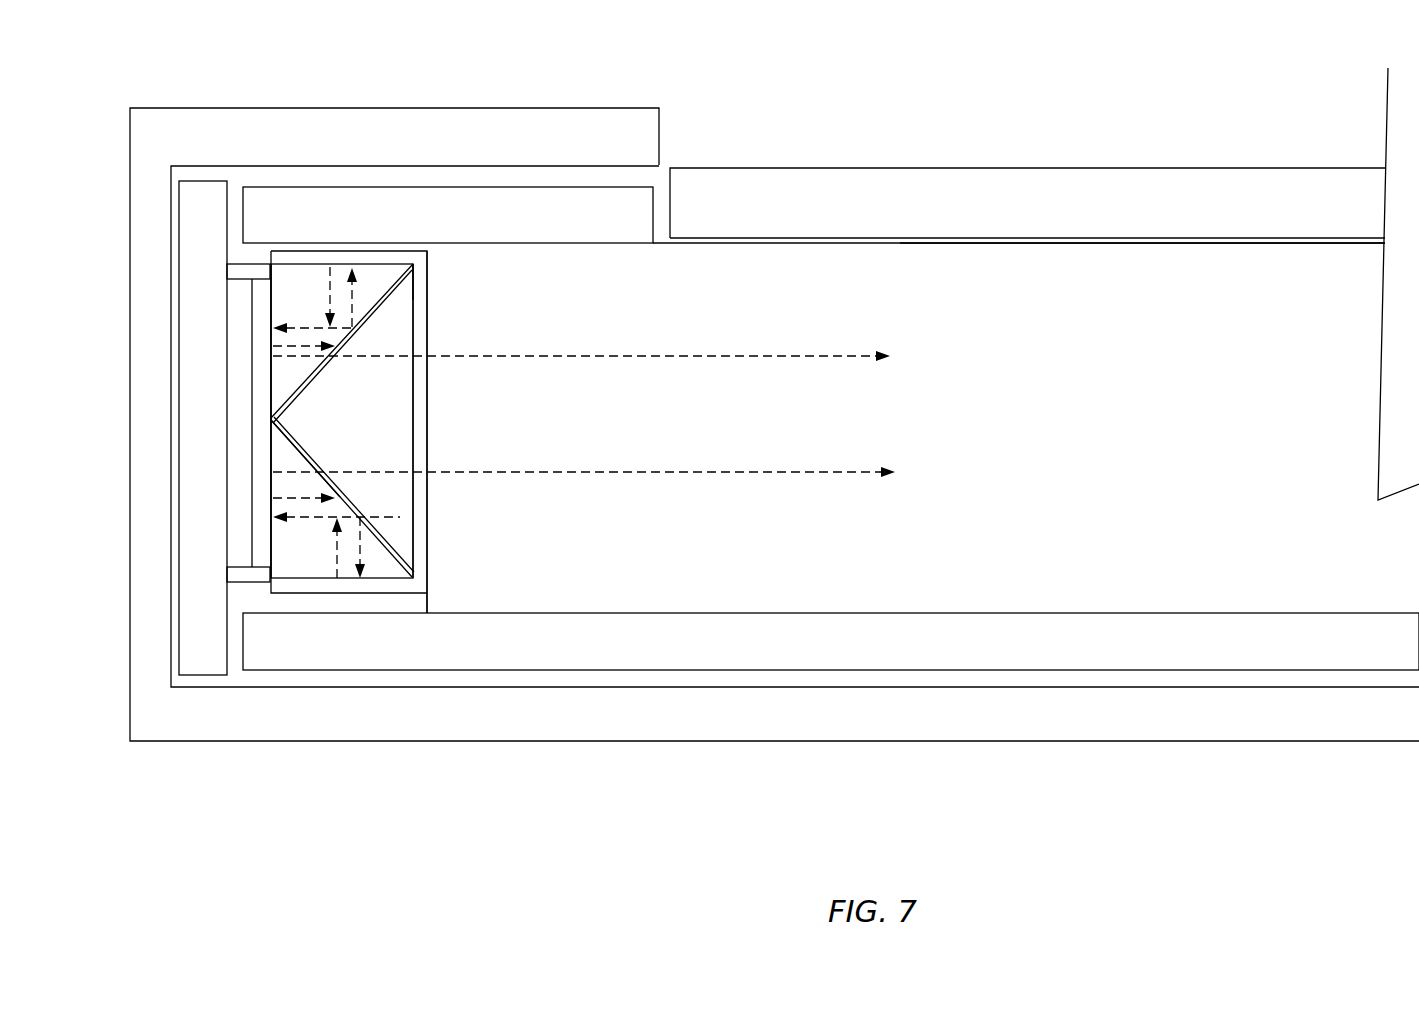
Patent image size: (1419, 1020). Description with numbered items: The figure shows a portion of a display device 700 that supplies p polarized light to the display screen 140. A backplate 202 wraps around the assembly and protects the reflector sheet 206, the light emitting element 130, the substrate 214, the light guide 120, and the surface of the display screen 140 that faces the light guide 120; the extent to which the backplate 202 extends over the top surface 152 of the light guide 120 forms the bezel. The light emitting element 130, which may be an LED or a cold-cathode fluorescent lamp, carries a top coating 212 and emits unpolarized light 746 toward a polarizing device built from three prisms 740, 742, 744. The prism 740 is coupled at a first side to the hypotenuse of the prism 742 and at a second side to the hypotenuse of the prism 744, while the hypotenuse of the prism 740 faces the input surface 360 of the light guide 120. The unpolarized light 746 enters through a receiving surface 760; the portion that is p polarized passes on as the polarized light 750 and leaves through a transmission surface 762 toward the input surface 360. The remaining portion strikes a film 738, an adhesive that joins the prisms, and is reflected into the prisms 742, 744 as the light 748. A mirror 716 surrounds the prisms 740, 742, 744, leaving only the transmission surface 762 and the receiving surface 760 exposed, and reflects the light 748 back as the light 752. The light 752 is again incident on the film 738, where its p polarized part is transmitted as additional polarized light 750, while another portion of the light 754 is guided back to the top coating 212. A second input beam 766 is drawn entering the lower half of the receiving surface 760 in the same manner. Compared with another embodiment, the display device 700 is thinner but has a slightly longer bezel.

The display device 700 is at (320, 84).
The backplate 202 is at (877, 723).
The substrate 214 is at (205, 277).
The reflector sheet 206 is at (620, 218).
The display screen 140 is at (1265, 183).
The light guide 120 is at (772, 247).
The top surface 152 is at (937, 247).
The light emitting element 130 is at (232, 366).
The top coating 212 is at (262, 416).
The mirror 716 is at (342, 262).
The receiving surface 760 is at (270, 448).
The transmission surface 762 is at (415, 437).
The input surface 360 is at (427, 530).
The prism 740 is at (410, 268).
The prism 742 is at (408, 300).
The prism 744 is at (387, 567).
The film 738 is at (297, 445).
The polarized light 750 is at (347, 357).
The unpolarized light 746 is at (277, 346).
The second input light 766 is at (272, 497).
The light 754 is at (330, 320).
The light 752 is at (333, 286).
The light 748 is at (358, 303).